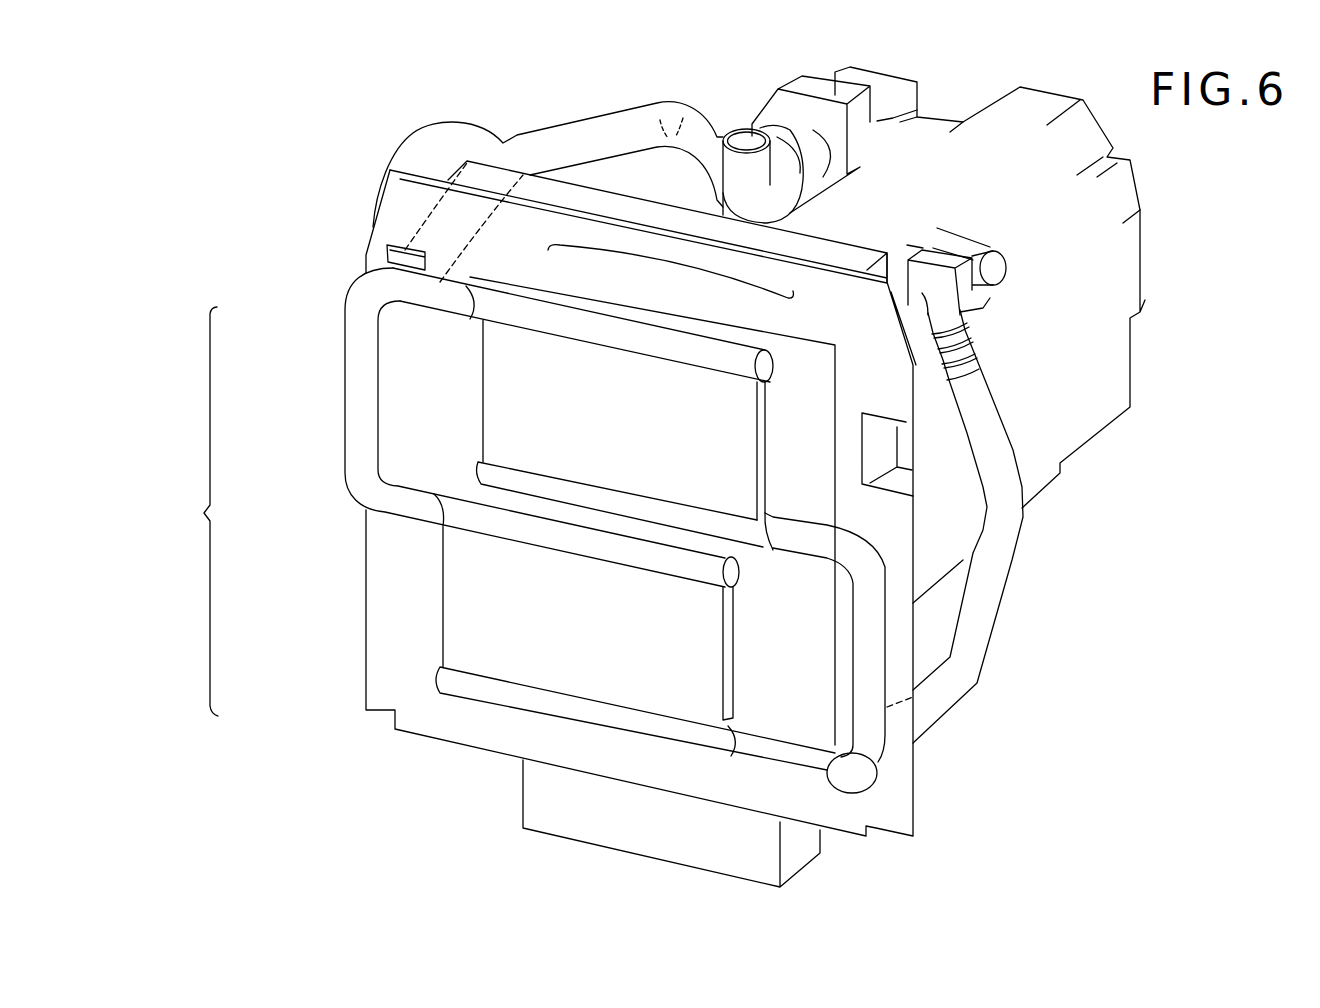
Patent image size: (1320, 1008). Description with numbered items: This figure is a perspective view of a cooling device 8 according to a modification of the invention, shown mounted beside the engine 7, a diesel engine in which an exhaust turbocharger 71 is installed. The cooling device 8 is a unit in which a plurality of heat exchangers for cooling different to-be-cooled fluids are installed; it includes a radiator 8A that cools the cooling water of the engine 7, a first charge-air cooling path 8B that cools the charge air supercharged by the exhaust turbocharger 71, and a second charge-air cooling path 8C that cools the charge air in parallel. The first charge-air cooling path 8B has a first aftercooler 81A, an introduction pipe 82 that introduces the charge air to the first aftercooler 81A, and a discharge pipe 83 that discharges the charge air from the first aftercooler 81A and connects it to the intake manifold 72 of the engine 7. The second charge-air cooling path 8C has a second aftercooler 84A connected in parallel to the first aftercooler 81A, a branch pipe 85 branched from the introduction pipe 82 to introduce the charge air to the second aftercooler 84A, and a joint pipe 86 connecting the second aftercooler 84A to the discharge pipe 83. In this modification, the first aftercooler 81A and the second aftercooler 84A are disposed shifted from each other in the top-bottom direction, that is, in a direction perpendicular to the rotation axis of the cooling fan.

The engine 7 is at (987, 101).
The exhaust turbocharger 71 is at (790, 85).
The intake manifold 72 is at (967, 302).
The cooling device 8 is at (313, 135).
The radiator 8A is at (827, 236).
The first charge-air cooling path 8B is at (502, 527).
The second charge-air cooling path 8C is at (639, 517).
The first aftercooler 81A is at (440, 603).
The introduction pipe 82 is at (390, 167).
The discharge pipe 83 is at (813, 785).
The second aftercooler 84A is at (638, 398).
The branch pipe 85 is at (465, 290).
The joint pipe 86 is at (819, 530).